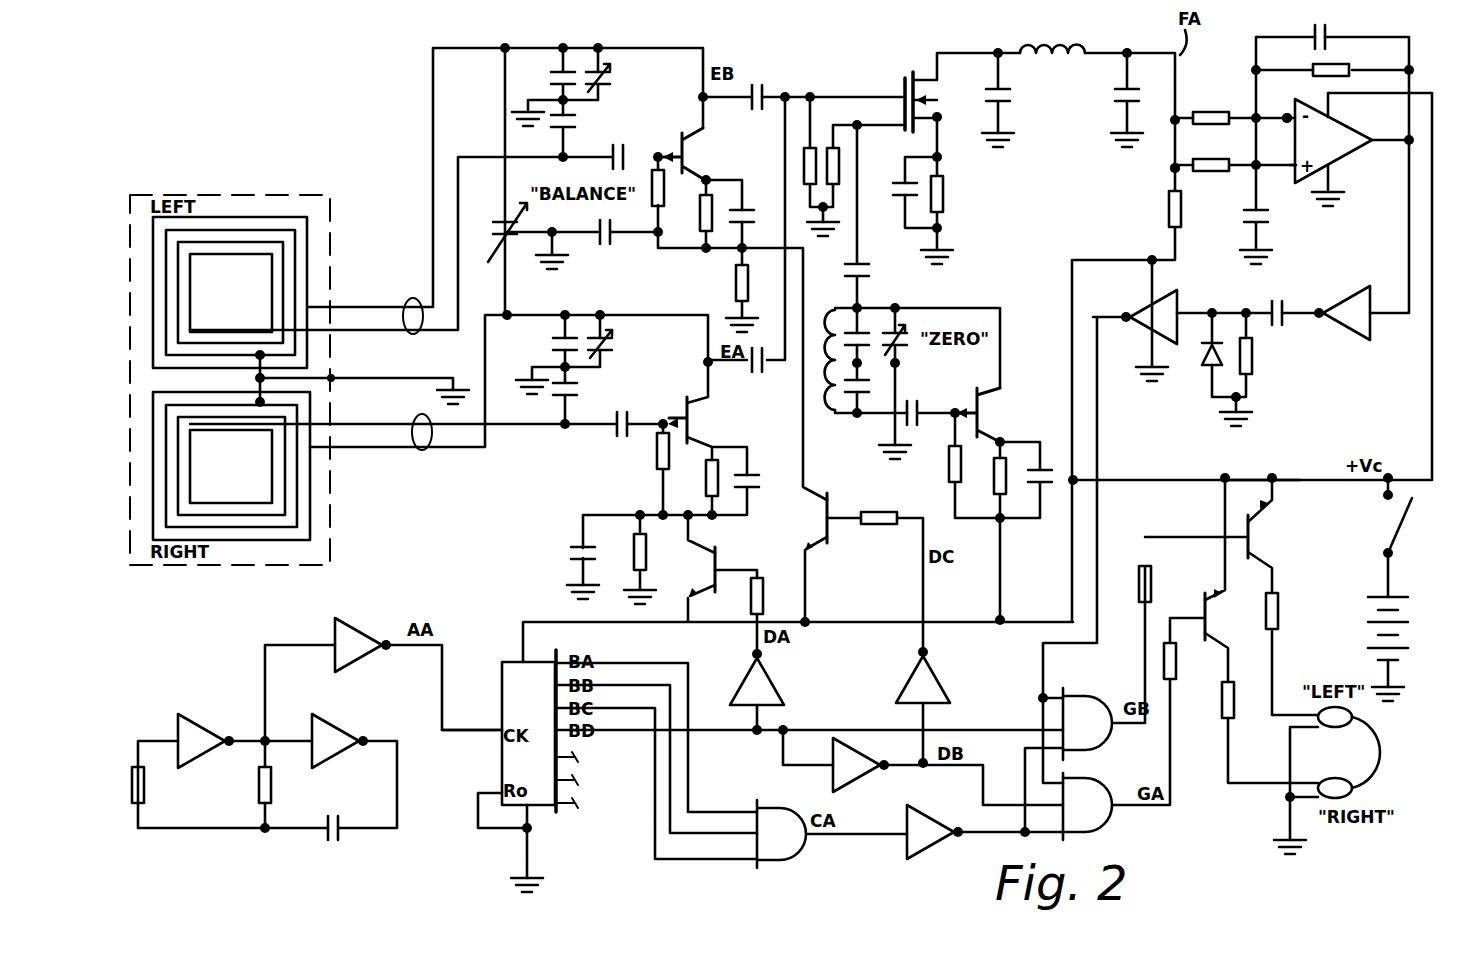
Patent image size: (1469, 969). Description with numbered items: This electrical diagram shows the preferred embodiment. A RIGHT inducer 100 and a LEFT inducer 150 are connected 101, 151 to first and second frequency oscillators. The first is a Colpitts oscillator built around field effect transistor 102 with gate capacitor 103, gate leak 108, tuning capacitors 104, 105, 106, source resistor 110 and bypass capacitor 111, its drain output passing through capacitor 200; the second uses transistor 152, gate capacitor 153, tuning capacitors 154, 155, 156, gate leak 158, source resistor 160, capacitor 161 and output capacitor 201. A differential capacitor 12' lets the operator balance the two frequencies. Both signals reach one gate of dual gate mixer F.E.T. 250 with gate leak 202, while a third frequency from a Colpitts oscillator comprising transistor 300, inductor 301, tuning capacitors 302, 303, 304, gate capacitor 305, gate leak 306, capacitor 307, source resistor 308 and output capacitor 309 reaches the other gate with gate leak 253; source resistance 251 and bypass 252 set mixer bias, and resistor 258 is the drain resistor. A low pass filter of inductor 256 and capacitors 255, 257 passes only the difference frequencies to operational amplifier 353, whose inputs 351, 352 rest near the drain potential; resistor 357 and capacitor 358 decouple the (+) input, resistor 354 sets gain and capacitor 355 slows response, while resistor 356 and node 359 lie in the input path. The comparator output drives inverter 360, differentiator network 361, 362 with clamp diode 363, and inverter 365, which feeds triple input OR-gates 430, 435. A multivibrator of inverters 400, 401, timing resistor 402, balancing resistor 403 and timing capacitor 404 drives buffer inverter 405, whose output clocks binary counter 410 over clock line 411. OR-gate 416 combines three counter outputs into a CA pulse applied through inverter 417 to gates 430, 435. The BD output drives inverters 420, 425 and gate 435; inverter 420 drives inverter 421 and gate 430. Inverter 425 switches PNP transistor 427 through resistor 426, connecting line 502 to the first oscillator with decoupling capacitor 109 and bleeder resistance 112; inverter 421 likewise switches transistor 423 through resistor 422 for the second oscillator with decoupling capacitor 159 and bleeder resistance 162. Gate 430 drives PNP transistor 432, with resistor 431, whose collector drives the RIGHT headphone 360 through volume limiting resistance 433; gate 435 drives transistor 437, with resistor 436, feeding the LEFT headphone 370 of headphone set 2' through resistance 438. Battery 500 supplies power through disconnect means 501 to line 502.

The RIGHT inducer 100 is at (240, 470).
The connection 101 is at (385, 430).
The field effect transistor 102 is at (681, 408).
The gate capacitor 103 is at (607, 426).
The tuning capacitor 104 is at (619, 346).
The tuning capacitor 105 is at (546, 346).
The tuning capacitor 106 is at (580, 406).
The gate leak 108 is at (658, 452).
The decoupling capacitor 109 is at (566, 544).
The resistor 110 is at (706, 472).
The capacitor 111 is at (760, 478).
The bleeder resistance 112 is at (634, 560).
The differential capacitor 12' is at (497, 228).
The LEFT inducer 150 is at (240, 265).
The connection 151 is at (370, 312).
The transistor 152 is at (683, 135).
The gate capacitor 153 is at (626, 146).
The tuning capacitor 154 is at (612, 86).
The tuning capacitor 155 is at (548, 90).
The tuning capacitor 156 is at (577, 128).
The gate leak 158 is at (655, 190).
The decoupling capacitor 159 is at (601, 245).
The source resistor 160 is at (705, 202).
The capacitor 161 is at (747, 219).
The bleeder resistance 162 is at (738, 296).
The output capacitor 200 is at (765, 370).
The output capacitor 201 is at (765, 90).
The gate leak 202 is at (806, 166).
The field effect transistor 250 is at (902, 82).
The source resistance 251 is at (943, 207).
The bypass 252 is at (895, 188).
The gate leak 253 is at (838, 170).
The capacitor 255 is at (1006, 97).
The inductor 256 is at (1050, 40).
The capacitor 257 is at (1116, 116).
The drain resistor 258 is at (1170, 225).
The transistor 300 is at (978, 416).
The inductor 301 is at (822, 330).
The tuning capacitor 302 is at (908, 330).
The tuning capacitor 303 is at (870, 328).
The tuning capacitor 304 is at (848, 398).
The gate capacitor 305 is at (918, 406).
The gate leak 306 is at (950, 471).
The capacitor 307 is at (1041, 460).
The source resistor 308 is at (998, 475).
The output capacitor 309 is at (870, 279).
The (−) input 351 is at (1285, 108).
The (+) input 352 is at (1288, 160).
The operational amplifier 353 is at (1365, 134).
The resistor 354 is at (1350, 68).
The capacitor 355 is at (1327, 36).
The input resistor 356 is at (1222, 114).
The resistor 357 is at (1218, 172).
The capacitor 358 is at (1268, 220).
The junction node 359 is at (1172, 128).
The inverter 360 is at (1366, 300).
The differentiator network 361 is at (1291, 291).
The differentiator network 362 is at (1251, 361).
The clamp diode 363 is at (1205, 352).
The inverter 365 is at (1182, 294).
The LEFT headphone 370 is at (1312, 708).
The headphone 2' is at (1368, 757).
The inverter 400 is at (346, 730).
The inverter 401 is at (238, 704).
The timing resistor 402 is at (276, 798).
The balancing resistor 403 is at (146, 790).
The timing capacitor 404 is at (342, 823).
The buffer inverter 405 is at (357, 630).
The binary counter 410 is at (512, 668).
The clock input line 411 is at (495, 734).
The three input OR-gate 416 is at (779, 824).
The inverter 417 is at (922, 825).
The inverter 420 is at (858, 762).
The inverter 421 is at (928, 690).
The resistor 422 is at (877, 514).
The PNP switch transistor 423 is at (830, 500).
The inverter 425 is at (767, 685).
The resistor 426 is at (764, 582).
The PNP switch transistor 427 is at (717, 557).
The OR-gate 430 is at (1094, 785).
The resistor 431 is at (1178, 672).
The PNP switch transistor 432 is at (1215, 624).
The volume limiting resistance 433 is at (1236, 695).
The OR-gate 435 is at (1082, 702).
The resistor 436 is at (1156, 580).
The PNP switch transistor 437 is at (1265, 540).
The volume limiting resistance 438 is at (1281, 610).
The battery 500 is at (1415, 642).
The disconnect means 501 is at (1410, 532).
The +Vc line 502 is at (1318, 476).